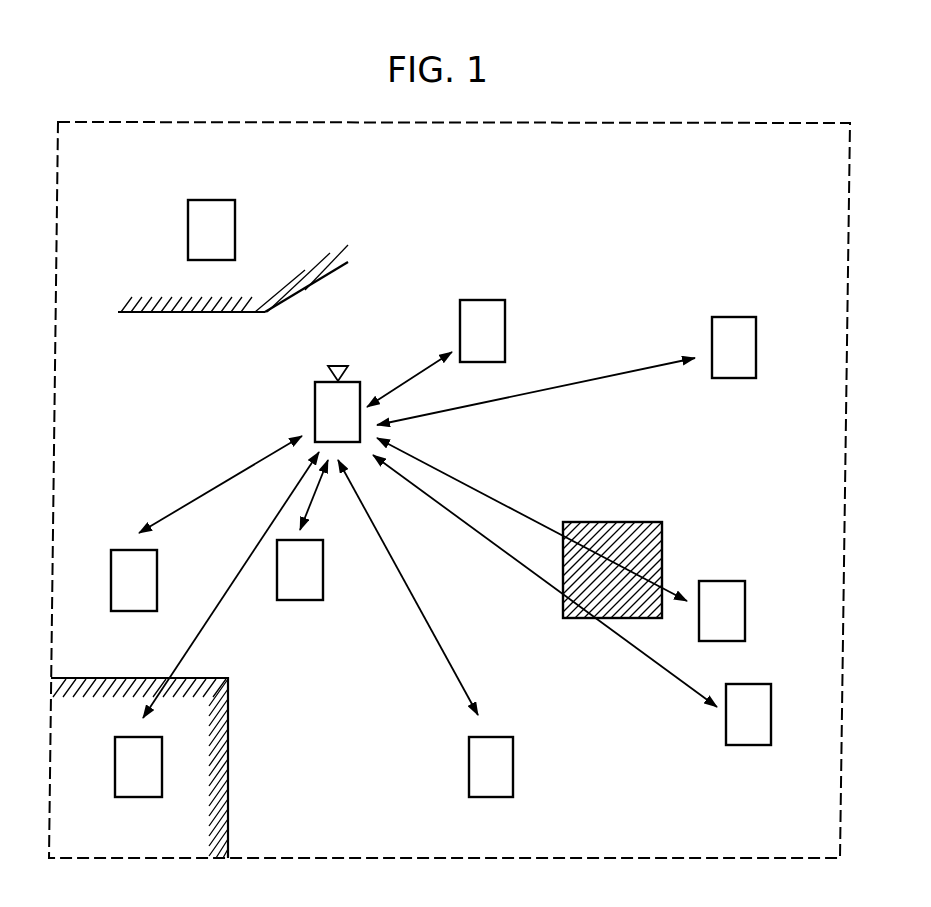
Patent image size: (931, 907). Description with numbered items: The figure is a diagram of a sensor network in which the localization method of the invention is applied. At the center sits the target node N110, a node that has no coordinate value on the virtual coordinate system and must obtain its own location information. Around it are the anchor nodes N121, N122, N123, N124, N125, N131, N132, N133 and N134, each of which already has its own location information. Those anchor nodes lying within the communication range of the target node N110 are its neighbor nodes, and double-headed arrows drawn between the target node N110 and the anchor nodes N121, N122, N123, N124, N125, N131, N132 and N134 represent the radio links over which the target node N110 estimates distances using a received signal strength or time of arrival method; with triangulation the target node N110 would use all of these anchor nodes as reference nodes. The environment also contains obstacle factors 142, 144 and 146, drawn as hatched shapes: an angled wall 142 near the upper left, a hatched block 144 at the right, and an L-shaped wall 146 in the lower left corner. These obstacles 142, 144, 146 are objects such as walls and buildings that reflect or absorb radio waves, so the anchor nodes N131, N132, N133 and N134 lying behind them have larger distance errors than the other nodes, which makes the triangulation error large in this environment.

The target node N110 is at (350, 368).
The anchor node N121 is at (311, 540).
The anchor node N122 is at (495, 300).
The anchor node N123 is at (146, 550).
The anchor node N124 is at (502, 737).
The anchor node N125 is at (745, 317).
The anchor node N131 is at (150, 737).
The anchor node N132 is at (733, 581).
The anchor node N133 is at (224, 200).
The anchor node N134 is at (760, 684).
The obstacle 142 is at (368, 248).
The obstacle 144 is at (648, 520).
The obstacle 146 is at (228, 780).